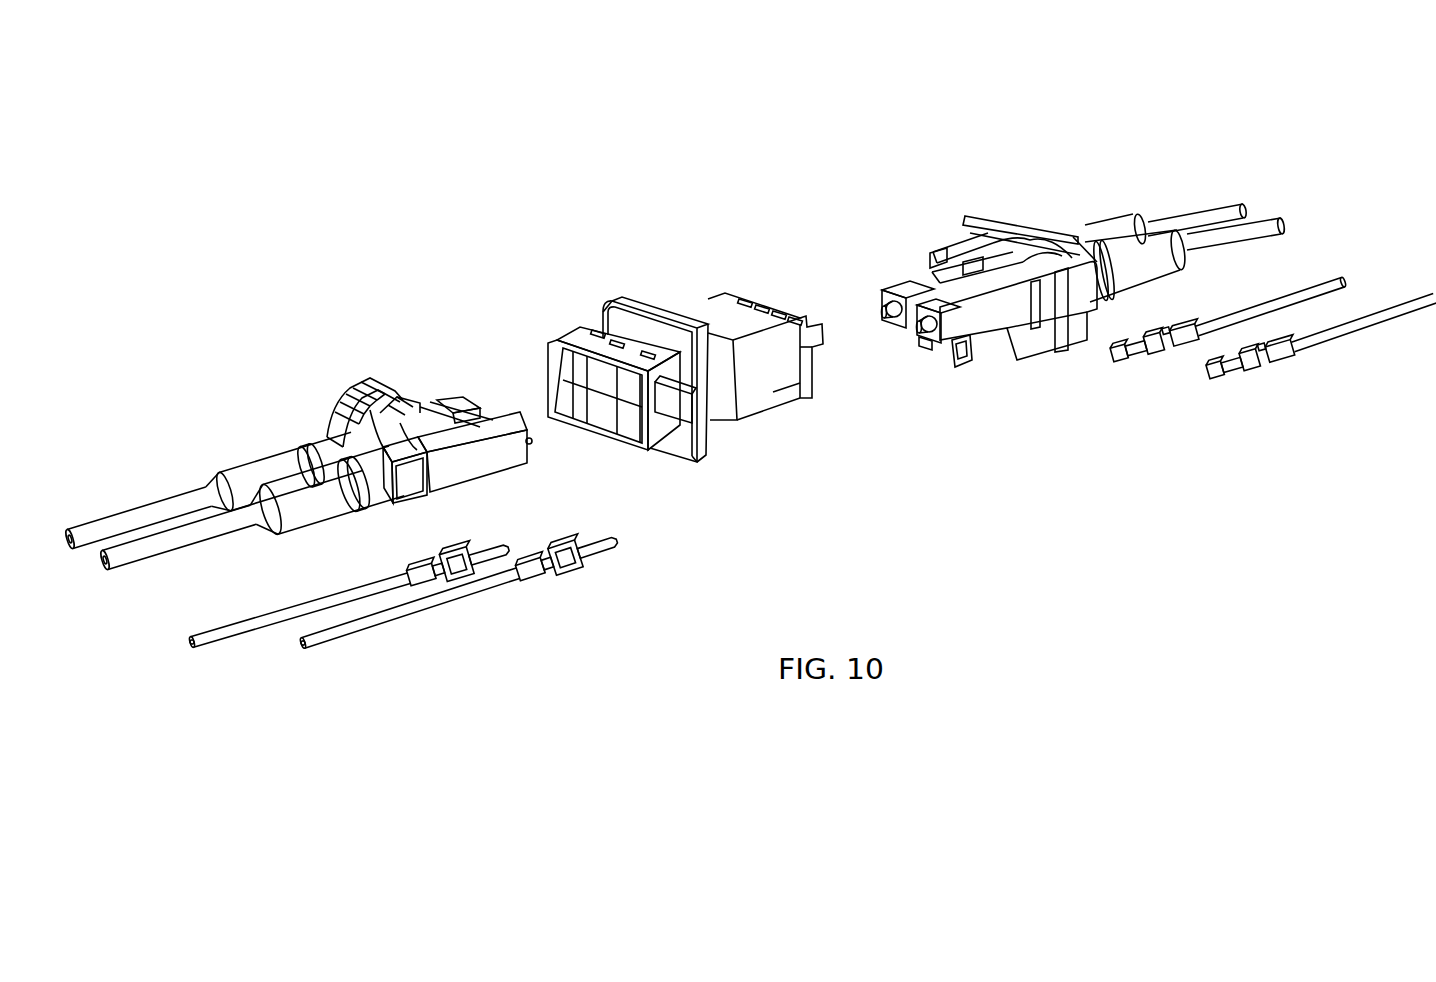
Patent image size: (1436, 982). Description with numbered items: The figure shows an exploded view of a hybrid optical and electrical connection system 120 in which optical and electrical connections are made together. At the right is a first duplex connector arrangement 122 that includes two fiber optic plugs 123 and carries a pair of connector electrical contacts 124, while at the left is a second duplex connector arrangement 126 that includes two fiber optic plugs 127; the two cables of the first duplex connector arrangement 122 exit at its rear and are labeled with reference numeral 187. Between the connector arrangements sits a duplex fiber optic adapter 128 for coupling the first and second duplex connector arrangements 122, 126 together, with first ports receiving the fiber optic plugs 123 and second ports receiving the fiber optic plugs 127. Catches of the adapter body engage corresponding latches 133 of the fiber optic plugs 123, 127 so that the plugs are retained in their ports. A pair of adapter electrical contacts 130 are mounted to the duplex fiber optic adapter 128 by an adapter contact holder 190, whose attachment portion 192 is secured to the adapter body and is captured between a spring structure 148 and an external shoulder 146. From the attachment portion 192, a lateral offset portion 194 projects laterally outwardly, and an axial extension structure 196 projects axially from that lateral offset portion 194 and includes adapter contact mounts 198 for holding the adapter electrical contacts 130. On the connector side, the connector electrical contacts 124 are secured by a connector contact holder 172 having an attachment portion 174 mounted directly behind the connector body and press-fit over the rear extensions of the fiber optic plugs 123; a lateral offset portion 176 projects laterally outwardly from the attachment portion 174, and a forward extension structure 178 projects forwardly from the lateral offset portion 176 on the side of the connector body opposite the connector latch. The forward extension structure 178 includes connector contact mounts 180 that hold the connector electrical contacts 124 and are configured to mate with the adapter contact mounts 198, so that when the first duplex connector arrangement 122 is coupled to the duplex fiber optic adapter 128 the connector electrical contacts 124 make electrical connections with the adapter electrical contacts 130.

The hybrid optical and electrical connection system 120 is at (258, 221).
The first duplex connector arrangement 122 is at (994, 192).
The fiber optic plugs 123 is at (891, 283).
The connector electrical contacts 124 is at (1147, 353).
The second duplex connector arrangement 126 is at (320, 358).
The fiber optic plugs 127 is at (468, 394).
The duplex fiber optic adapter 128 is at (673, 232).
The adapter electrical contacts 130 is at (487, 540).
The latches 133 is at (400, 392).
The external shoulder 146 is at (740, 370).
The spring structure 148 is at (678, 407).
The connector contact holder 172 is at (1079, 350).
The attachment portion 174 is at (1068, 263).
The lateral offset portion 176 is at (1117, 308).
The forward extension structure 178 is at (1025, 362).
The connector contact mounts 180 is at (958, 363).
The optical cables 187 is at (1198, 217).
The adapter contact holder 190 is at (616, 302).
The attachment portion 192 is at (640, 310).
The lateral offset portion 194 is at (700, 445).
The axial extension structure 196 is at (737, 427).
The adapter contact mounts 198 is at (783, 430).